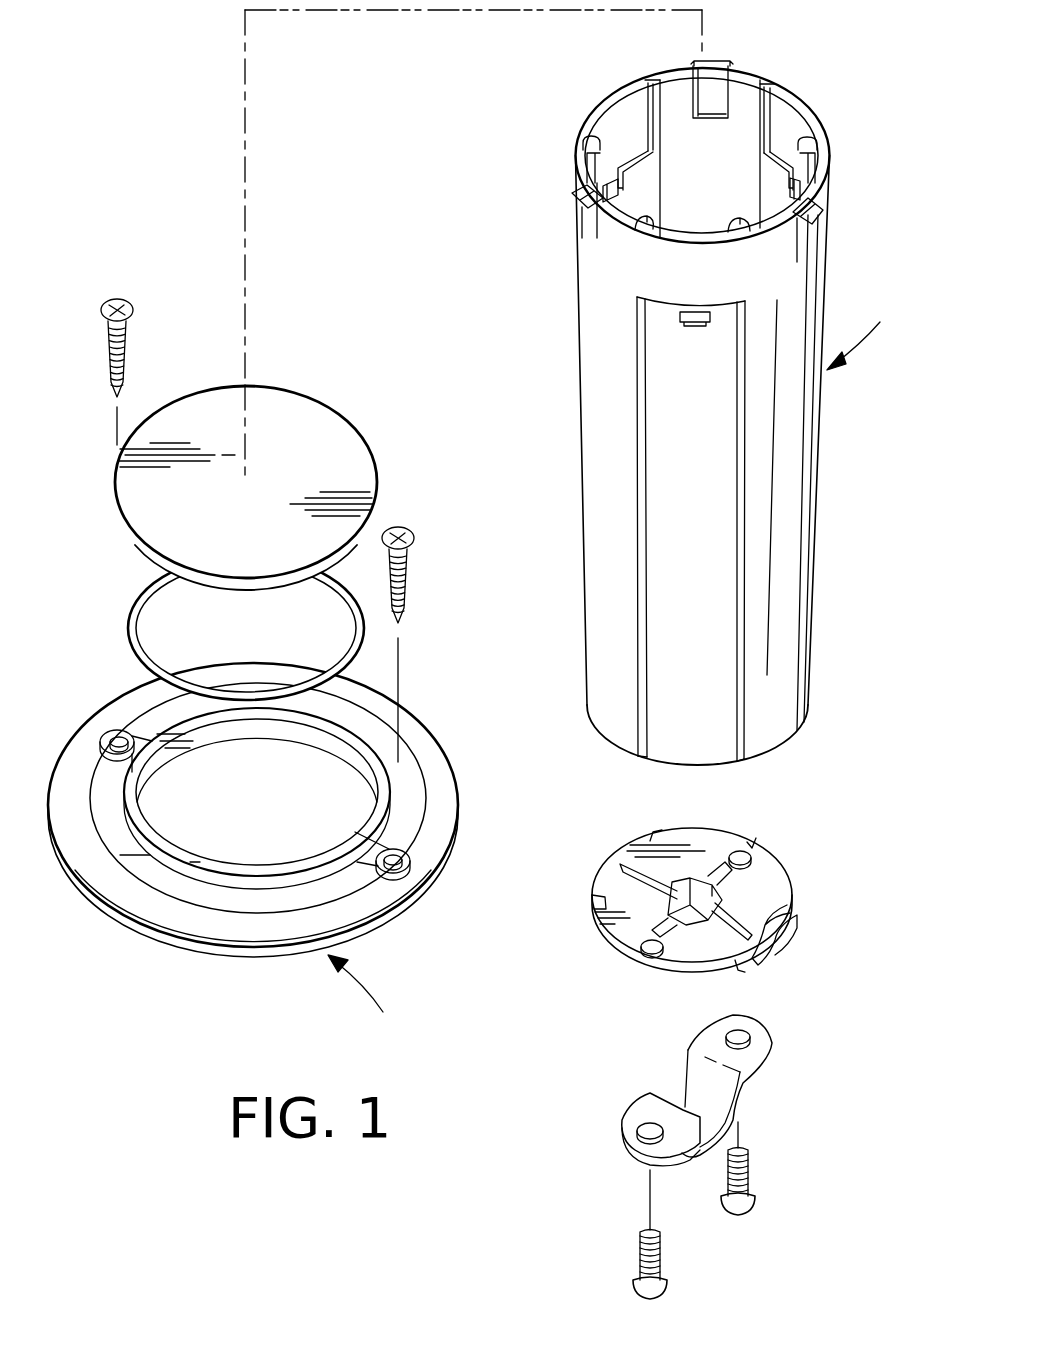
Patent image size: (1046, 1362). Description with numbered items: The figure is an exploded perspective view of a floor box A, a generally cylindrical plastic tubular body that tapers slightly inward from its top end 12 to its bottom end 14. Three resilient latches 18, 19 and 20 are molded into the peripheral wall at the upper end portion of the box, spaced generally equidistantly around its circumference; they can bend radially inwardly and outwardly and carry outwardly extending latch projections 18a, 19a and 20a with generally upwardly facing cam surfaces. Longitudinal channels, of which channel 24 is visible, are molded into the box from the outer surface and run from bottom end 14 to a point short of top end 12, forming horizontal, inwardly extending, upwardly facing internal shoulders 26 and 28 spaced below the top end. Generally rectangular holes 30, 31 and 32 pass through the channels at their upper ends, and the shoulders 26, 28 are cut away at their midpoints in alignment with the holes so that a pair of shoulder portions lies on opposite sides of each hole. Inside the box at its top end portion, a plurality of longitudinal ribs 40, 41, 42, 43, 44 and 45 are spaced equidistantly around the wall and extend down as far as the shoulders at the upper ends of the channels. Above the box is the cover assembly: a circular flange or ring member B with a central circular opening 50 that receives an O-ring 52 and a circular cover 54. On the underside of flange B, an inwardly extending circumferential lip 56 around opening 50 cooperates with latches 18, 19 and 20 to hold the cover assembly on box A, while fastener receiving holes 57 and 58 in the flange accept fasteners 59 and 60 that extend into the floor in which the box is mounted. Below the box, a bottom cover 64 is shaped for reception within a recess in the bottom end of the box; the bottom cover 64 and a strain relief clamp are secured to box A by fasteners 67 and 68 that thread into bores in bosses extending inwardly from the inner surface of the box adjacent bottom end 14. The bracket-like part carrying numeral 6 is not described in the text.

The mounting bracket 6 is at (763, 1063).
The top end 12 is at (593, 110).
The bottom end 14 is at (785, 740).
The resilient latch 18 is at (587, 227).
The latch projection 18a is at (573, 191).
The resilient latch 19 is at (705, 88).
The latch projection 19a is at (718, 62).
The resilient latch 20 is at (813, 233).
The latch projection 20a is at (823, 202).
The longitudinal channel 24 is at (702, 747).
The internal shoulder 26 is at (647, 164).
The internal shoulder 28 is at (768, 150).
The rectangular hole 30 is at (685, 320).
The rectangular hole 31 is at (627, 200).
The rectangular hole 32 is at (790, 197).
The longitudinal rib 40 is at (653, 227).
The longitudinal rib 41 is at (586, 137).
The longitudinal rib 42 is at (645, 100).
The longitudinal rib 43 is at (768, 86).
The longitudinal rib 44 is at (805, 140).
The longitudinal rib 45 is at (745, 228).
The central circular opening 50 is at (215, 880).
The O-ring 52 is at (128, 603).
The circular cover 54 is at (267, 397).
The circumferential lip 56 is at (212, 758).
The fastener receiving hole 57 is at (112, 732).
The fastener receiving hole 58 is at (403, 850).
The fastener 59 is at (105, 303).
The fastener 60 is at (413, 530).
The bottom cover 64 is at (762, 870).
The fastener 67 is at (638, 1250).
The fastener 68 is at (749, 1153).
The floor box A is at (863, 329).
The flange B is at (366, 991).